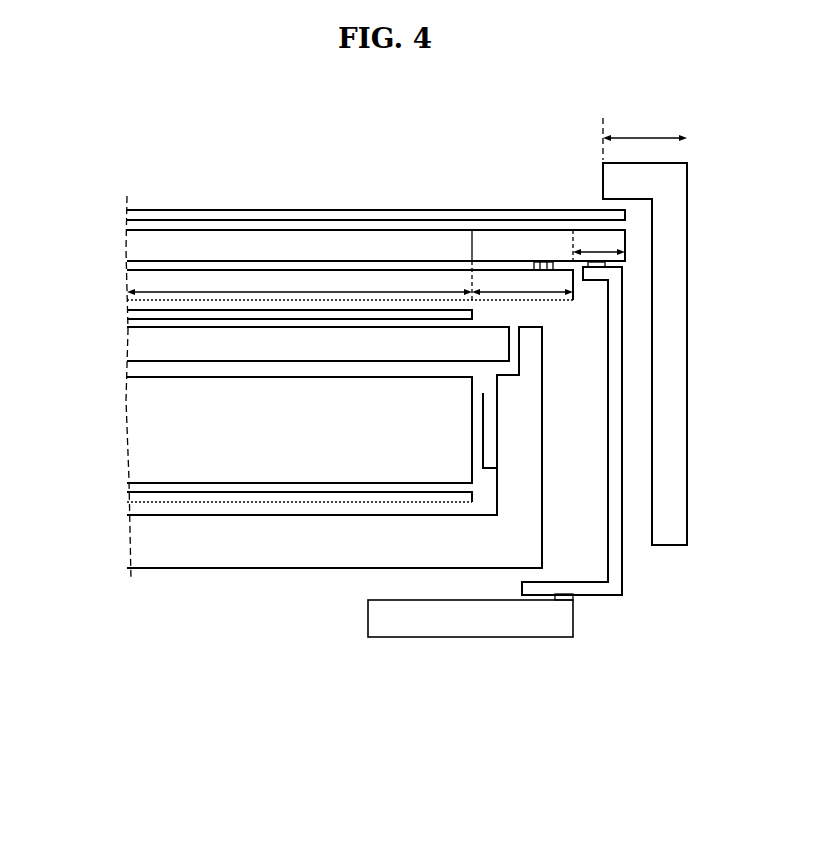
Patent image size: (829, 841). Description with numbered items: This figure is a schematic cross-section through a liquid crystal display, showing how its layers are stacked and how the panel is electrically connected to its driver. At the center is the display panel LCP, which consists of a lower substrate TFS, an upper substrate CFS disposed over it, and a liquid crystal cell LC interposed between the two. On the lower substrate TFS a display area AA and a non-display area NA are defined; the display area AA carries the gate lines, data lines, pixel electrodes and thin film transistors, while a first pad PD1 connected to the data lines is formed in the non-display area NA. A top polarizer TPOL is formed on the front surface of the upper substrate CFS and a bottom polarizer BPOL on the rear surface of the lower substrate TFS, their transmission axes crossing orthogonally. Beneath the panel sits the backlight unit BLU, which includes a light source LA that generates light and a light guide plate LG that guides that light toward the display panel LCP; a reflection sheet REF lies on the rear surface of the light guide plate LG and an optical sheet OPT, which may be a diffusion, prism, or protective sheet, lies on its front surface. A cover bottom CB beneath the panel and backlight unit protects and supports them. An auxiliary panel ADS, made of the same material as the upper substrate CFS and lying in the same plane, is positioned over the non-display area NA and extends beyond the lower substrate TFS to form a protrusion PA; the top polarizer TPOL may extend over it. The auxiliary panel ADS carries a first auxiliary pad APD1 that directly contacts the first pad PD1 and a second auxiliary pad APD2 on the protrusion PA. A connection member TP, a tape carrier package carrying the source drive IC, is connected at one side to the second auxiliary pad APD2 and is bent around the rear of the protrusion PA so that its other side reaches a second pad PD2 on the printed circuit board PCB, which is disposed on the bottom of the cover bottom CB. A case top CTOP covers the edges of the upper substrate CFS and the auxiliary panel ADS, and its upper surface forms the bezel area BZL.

The top polarizer TPOL is at (126, 213).
The display panel LCP is at (60, 242).
The upper substrate CFS is at (126, 250).
The liquid crystal cell LC is at (126, 265).
The lower substrate TFS is at (122, 283).
The bottom polarizer BPOL is at (128, 316).
The backlight unit BLU is at (72, 517).
The optical sheet OPT is at (130, 343).
The light source LA is at (490, 423).
The light guide plate LG is at (135, 430).
The reflection sheet REF is at (130, 496).
The cover bottom CB is at (132, 540).
The printed circuit board PCB is at (480, 628).
The first pad PD1 is at (541, 262).
The first auxiliary pad APD1 is at (548, 262).
The second pad PD2 is at (572, 597).
The second auxiliary pad APD2 is at (606, 265).
The auxiliary panel ADS is at (627, 246).
The case top CTOP is at (677, 418).
The connection member TP is at (610, 472).
The bezel area BZL is at (645, 139).
The display area AA is at (299, 284).
The non-display area NA is at (522, 285).
The protrusion PA is at (599, 244).